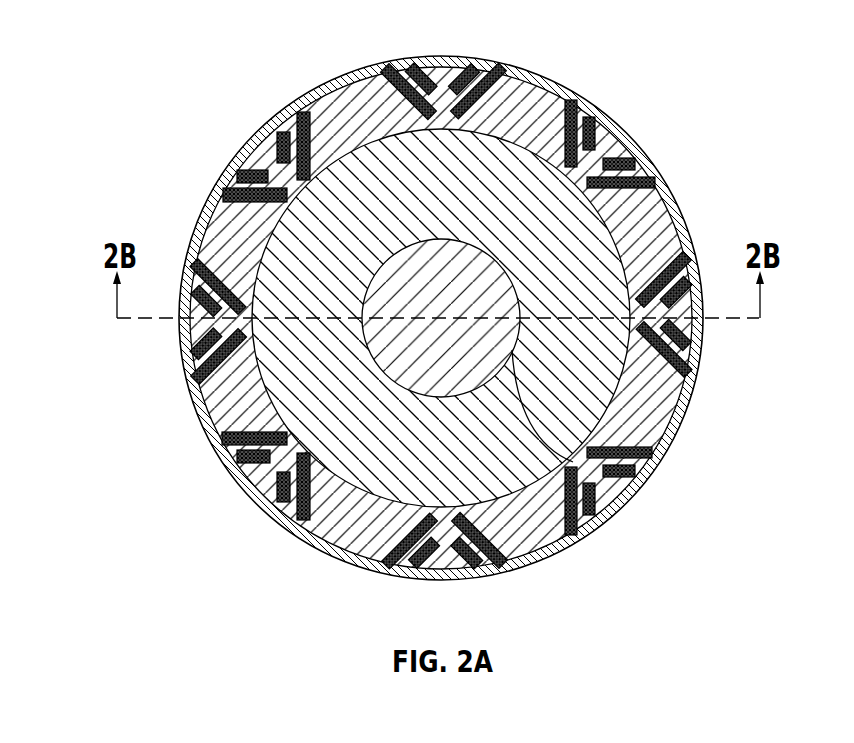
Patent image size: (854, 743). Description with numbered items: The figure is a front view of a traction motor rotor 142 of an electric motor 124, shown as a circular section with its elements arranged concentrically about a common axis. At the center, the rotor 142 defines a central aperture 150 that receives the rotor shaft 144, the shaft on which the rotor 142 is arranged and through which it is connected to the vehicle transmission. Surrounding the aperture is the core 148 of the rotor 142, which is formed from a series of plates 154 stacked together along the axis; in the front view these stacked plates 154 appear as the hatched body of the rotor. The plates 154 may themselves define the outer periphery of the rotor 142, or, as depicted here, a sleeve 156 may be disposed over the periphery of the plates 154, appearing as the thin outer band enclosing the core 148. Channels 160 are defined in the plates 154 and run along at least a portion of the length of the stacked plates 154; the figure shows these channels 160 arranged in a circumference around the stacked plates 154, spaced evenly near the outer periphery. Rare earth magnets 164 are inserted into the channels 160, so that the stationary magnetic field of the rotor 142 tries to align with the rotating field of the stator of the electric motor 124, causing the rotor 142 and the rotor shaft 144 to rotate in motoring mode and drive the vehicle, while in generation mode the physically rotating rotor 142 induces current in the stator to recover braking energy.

The electric motor 124 is at (427, 315).
The rotor 142 is at (427, 315).
The rotor shaft 144 is at (426, 363).
The core 148 is at (371, 152).
The central aperture 150 is at (610, 514).
The plates 154 is at (268, 259).
The sleeve 156 is at (188, 378).
The channels 160 is at (412, 64).
The rare earth magnets 164 is at (468, 568).